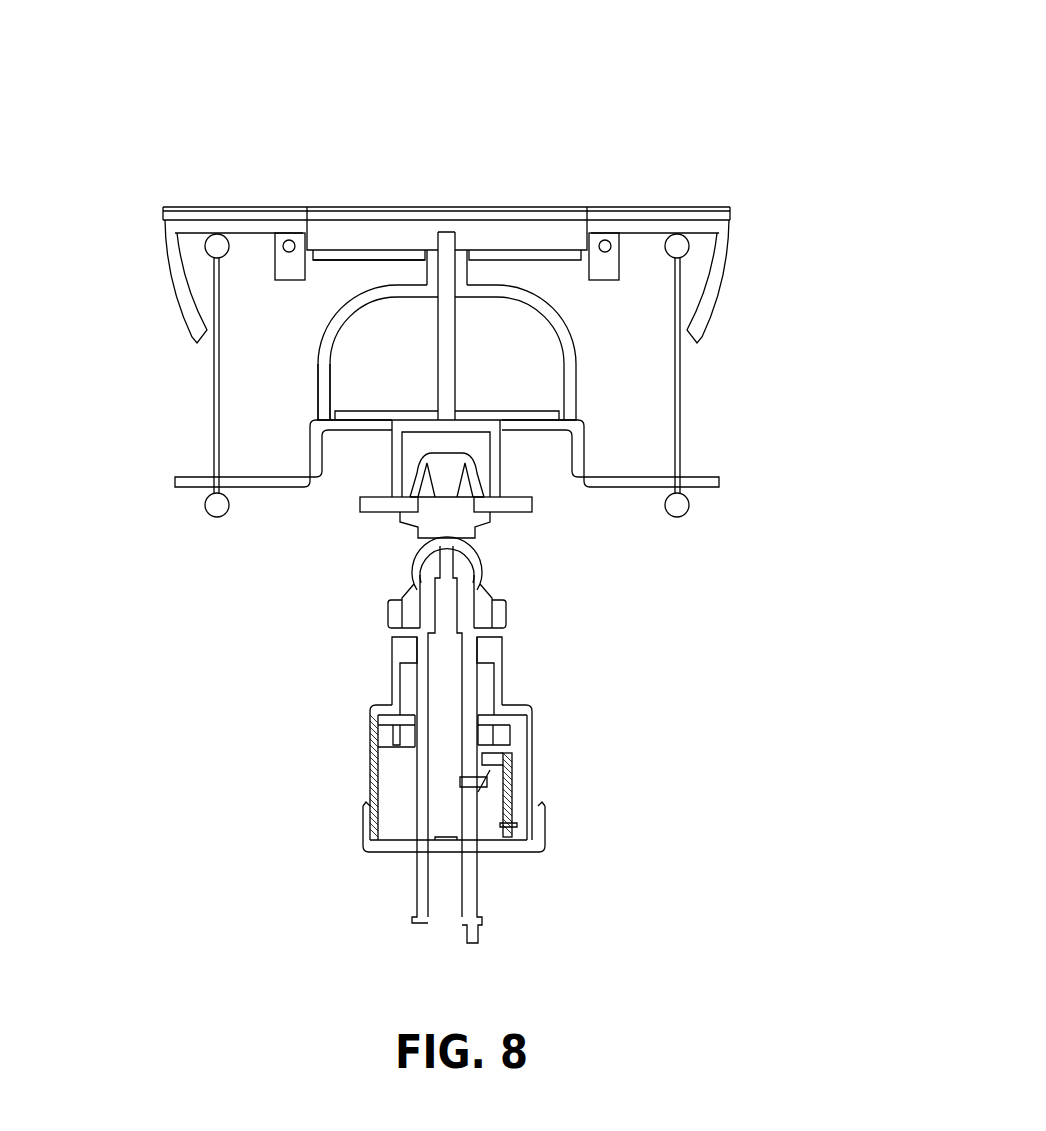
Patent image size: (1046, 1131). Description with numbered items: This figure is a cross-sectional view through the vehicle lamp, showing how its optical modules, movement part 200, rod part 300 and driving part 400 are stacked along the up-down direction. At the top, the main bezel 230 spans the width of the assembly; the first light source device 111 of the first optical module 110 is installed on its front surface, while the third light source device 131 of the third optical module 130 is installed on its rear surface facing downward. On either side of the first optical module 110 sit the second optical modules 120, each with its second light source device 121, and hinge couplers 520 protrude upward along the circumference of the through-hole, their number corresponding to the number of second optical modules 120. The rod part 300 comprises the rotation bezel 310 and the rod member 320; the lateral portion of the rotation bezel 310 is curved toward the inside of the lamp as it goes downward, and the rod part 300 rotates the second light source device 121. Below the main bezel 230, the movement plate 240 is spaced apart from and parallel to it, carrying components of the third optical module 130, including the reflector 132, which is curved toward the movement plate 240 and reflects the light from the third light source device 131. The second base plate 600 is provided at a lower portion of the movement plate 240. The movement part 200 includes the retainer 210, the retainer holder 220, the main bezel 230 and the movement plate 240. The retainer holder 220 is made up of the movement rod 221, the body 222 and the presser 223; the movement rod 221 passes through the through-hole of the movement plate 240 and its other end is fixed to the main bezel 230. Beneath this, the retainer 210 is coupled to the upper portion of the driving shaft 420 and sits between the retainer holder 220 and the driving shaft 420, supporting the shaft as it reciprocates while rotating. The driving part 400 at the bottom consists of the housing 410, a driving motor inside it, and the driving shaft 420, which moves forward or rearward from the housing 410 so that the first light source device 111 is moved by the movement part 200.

The first optical module 110 is at (447, 88).
The first light source device 111 is at (420, 206).
The second optical module 120 is at (247, 90).
The second light source device 121 is at (222, 208).
The hinge coupler 520 is at (285, 265).
The third optical module 130 is at (62, 336).
The third light source device 131 is at (353, 258).
The reflector 132 is at (345, 407).
The movement part 200 is at (130, 800).
The retainer 210 is at (482, 598).
The retainer holder 220 is at (522, 543).
The movement rod 221 is at (458, 372).
The body 222 is at (503, 463).
The presser 223 is at (530, 505).
The main bezel 230 is at (329, 517).
The movement plate 240 is at (323, 605).
The rod part 300 is at (477, 368).
The rotation bezel 310 is at (167, 263).
The rod member 320 is at (213, 300).
The driving part 400 is at (560, 744).
The housing 410 is at (497, 690).
The driving shaft 420 is at (467, 758).
The second base plate 600 is at (285, 482).